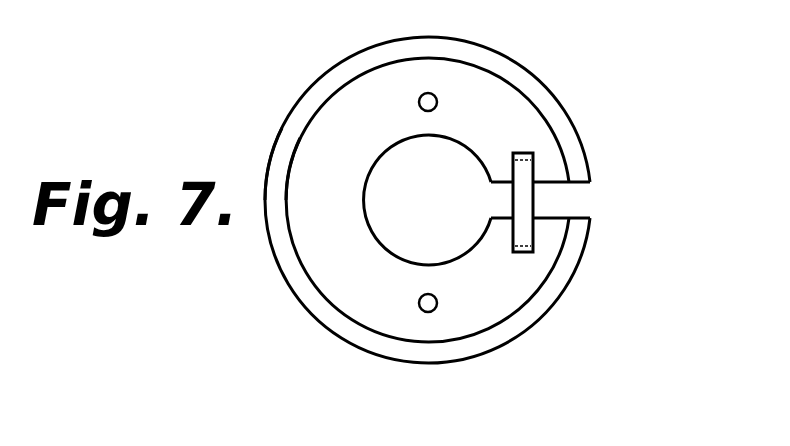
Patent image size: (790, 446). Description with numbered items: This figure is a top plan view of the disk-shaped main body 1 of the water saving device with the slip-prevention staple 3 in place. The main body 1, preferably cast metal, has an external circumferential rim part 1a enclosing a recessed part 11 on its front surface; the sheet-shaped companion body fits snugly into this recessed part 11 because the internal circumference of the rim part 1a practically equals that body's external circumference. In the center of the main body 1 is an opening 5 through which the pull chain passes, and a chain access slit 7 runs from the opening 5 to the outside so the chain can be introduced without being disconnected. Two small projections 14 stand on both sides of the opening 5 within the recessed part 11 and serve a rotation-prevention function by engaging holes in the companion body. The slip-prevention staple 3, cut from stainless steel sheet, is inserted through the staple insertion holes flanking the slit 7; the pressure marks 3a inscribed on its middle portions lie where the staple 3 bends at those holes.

The main body 1 is at (508, 347).
The external circumferential rim part 1a is at (355, 67).
The recessed part 11 is at (315, 197).
The opening 5 is at (452, 157).
The chain access slit 7 is at (553, 187).
The slip-prevention staple 3 is at (537, 153).
The pressure marks 3a is at (525, 252).
The small projections 14 is at (428, 93).